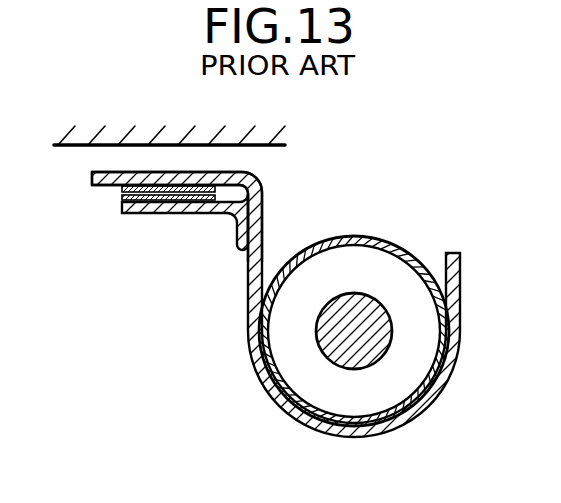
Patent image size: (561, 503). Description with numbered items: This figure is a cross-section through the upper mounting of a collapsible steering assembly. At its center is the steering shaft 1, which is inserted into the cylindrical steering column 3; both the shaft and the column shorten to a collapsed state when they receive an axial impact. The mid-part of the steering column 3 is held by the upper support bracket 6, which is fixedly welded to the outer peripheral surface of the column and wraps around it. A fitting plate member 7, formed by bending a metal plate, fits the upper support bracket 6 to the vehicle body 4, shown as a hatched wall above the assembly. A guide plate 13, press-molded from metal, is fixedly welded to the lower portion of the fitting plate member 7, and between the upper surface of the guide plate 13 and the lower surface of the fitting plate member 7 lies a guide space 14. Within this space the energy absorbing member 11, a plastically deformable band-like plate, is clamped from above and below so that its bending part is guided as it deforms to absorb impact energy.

The steering shaft 1 is at (382, 306).
The steering column 3 is at (353, 238).
The vehicle body 4 is at (183, 134).
The upper support bracket 6 is at (254, 365).
The fitting plate member 7 is at (92, 178).
The energy absorbing member 11 is at (122, 198).
The guide plate 13 is at (165, 213).
The guide space 14 is at (238, 195).